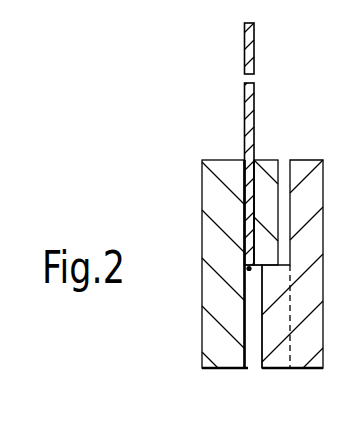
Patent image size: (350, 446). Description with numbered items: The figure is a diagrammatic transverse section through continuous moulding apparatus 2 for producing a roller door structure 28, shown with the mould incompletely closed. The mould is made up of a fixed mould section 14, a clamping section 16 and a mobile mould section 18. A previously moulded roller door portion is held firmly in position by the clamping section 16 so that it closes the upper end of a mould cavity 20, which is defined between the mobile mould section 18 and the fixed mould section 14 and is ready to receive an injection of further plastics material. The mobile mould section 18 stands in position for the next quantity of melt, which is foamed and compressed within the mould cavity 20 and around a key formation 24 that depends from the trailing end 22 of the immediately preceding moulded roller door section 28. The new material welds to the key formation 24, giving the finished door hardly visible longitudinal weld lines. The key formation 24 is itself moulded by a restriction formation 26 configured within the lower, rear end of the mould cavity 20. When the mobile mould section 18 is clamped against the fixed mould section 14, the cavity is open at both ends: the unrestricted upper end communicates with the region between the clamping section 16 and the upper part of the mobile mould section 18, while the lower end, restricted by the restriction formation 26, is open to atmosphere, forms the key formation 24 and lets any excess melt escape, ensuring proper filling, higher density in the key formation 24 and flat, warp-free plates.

The valve assembly 2 is at (235, 221).
The fixed mould section 14 is at (280, 371).
The clamping section 16 is at (267, 165).
The mobile mould section 18 is at (212, 197).
The mould cavity 20 is at (250, 332).
The trailing end 22 is at (234, 250).
The key formation 24 is at (247, 268).
The restriction formation 26 is at (253, 372).
The roller door structure 28 is at (252, 219).